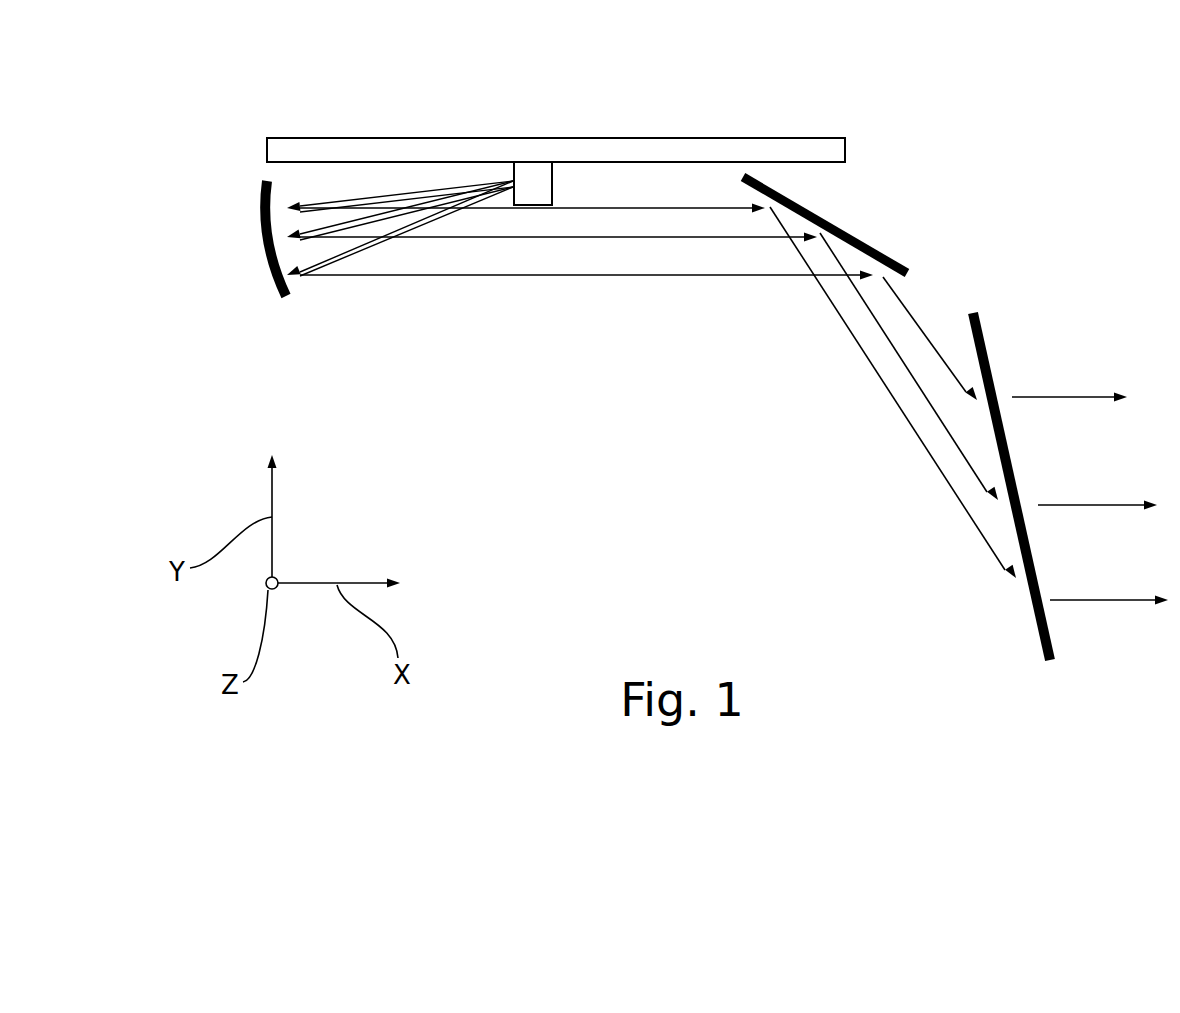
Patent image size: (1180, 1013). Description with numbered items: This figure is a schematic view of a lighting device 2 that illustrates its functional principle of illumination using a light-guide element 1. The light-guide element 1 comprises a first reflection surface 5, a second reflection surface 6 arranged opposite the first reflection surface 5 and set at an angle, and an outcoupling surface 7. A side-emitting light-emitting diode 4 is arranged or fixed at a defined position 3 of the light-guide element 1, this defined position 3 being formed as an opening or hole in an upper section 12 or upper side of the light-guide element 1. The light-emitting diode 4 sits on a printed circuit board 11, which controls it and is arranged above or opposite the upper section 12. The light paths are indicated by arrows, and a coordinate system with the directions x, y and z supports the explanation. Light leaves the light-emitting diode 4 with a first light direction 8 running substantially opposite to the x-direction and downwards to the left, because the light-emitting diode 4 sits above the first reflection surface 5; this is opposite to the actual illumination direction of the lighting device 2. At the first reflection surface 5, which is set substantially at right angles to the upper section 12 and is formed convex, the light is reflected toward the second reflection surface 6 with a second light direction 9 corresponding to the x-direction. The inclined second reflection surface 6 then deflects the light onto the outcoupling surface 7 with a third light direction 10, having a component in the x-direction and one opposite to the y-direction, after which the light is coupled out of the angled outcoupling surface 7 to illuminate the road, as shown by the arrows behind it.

The light-guide element 1 is at (968, 188).
The lighting device 2 is at (841, 100).
The defined position 3 is at (533, 163).
The light-emitting diode 4 is at (552, 192).
The first reflection surface 5 is at (265, 265).
The second reflection surface 6 is at (827, 222).
The outcoupling surface 7 is at (1033, 622).
The first light direction 8 is at (393, 192).
The second light direction 9 is at (560, 277).
The third light direction 10 is at (878, 370).
The printed circuit board 11 is at (468, 138).
The upper section 12 is at (517, 507).